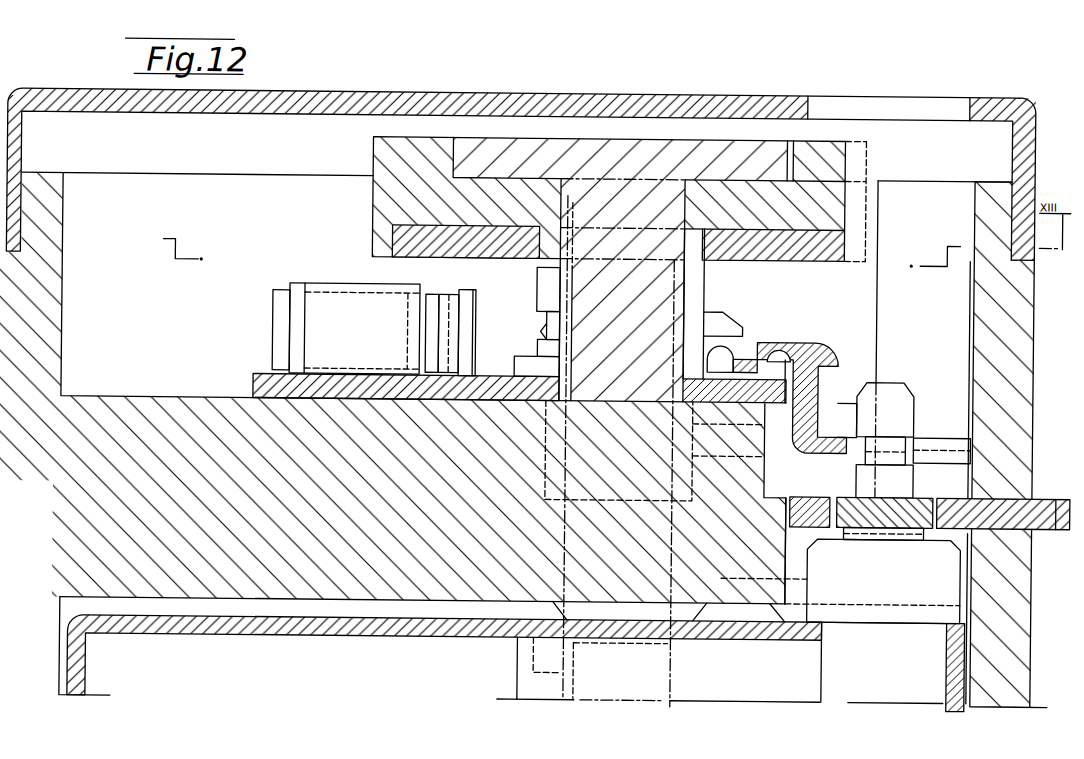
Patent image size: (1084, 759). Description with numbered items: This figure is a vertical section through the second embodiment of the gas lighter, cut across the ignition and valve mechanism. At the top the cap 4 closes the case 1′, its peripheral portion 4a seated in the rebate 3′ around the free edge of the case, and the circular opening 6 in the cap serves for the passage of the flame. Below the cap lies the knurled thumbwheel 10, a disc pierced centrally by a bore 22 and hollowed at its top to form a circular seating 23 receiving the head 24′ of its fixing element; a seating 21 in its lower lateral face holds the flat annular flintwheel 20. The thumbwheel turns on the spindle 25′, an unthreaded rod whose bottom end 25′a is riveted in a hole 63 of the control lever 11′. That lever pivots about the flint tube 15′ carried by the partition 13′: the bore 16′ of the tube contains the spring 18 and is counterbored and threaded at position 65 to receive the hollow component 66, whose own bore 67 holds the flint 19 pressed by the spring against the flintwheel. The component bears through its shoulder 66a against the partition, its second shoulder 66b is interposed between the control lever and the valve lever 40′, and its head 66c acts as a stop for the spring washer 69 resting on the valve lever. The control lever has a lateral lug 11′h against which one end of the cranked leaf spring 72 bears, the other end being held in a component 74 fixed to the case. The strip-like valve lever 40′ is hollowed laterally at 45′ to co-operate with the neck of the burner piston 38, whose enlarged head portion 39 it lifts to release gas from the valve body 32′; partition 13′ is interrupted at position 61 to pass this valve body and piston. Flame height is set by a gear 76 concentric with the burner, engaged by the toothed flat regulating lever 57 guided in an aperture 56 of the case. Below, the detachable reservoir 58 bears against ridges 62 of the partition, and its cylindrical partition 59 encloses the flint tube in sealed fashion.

The cap 4 is at (40, 82).
The peripheral portion of cap 4a is at (1028, 100).
The circular opening 6 is at (893, 104).
The thumbwheel 10 is at (517, 149).
The rebate 3′ is at (1015, 183).
The case 1′ is at (1010, 308).
The circular seating 23 is at (453, 173).
The bore 22 is at (568, 194).
The head of fixing screw 24′ is at (711, 152).
The seating 21 is at (394, 237).
The flintwheel 20 is at (790, 244).
The component 74 is at (467, 289).
The head 66c is at (539, 270).
The hollow component 66 is at (549, 318).
The second shoulder 66b is at (545, 352).
The shoulder 66a is at (520, 382).
The leaf spring 72 is at (280, 300).
The lateral lug 11′h is at (315, 339).
The partition 13′ is at (103, 420).
The control lever 11′ is at (252, 382).
The spindle 25′ is at (708, 284).
The spring washer 69 is at (712, 308).
The bottom end of rod 25′a is at (735, 335).
The valve lever 40′ is at (834, 341).
The hole 63 is at (714, 370).
The head portion 39 is at (888, 384).
The piston 38 is at (895, 439).
The lateral hollow 45′ is at (922, 437).
The aperture 56 is at (1006, 486).
The regulating lever 57 is at (1046, 524).
The gear 76 is at (921, 489).
The bore of hollow component 67 is at (766, 421).
The counterbored and threaded position 65 is at (743, 449).
The interruption of partition 61 is at (770, 475).
The bore of flint tube 16′ is at (812, 572).
The valve body 32′ is at (940, 581).
The detachable reservoir 58 is at (218, 630).
The ridges 62 is at (288, 603).
The cylindrical partition 59 is at (522, 650).
The flint tube 15′ is at (522, 672).
The flint 19 is at (649, 641).
The spring 18 is at (727, 678).